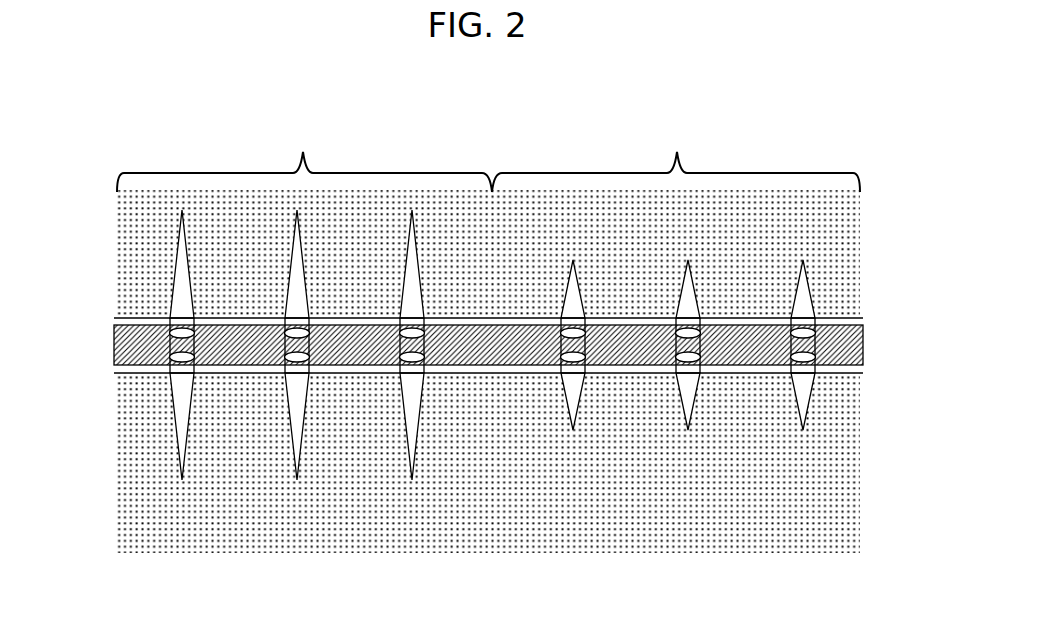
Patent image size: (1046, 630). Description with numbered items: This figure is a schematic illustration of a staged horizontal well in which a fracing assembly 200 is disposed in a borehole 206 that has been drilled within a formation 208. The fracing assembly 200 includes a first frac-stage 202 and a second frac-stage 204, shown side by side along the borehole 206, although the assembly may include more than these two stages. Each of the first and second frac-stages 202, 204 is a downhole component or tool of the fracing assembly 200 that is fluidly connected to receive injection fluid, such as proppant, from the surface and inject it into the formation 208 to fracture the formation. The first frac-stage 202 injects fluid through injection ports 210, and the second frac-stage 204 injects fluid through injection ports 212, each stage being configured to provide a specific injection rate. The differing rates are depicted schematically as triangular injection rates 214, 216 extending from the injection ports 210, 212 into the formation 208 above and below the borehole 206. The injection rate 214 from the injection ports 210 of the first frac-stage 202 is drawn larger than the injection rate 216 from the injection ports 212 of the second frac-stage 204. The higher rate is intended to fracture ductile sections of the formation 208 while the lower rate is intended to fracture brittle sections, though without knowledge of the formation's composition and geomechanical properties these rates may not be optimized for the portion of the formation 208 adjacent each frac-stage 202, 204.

The fracing assembly 200 is at (93, 331).
The first frac-stage 202 is at (304, 156).
The second frac-stage 204 is at (676, 156).
The borehole 206 is at (852, 374).
The formation 208 is at (488, 371).
The injection ports 210 is at (398, 356).
The injection ports 212 is at (790, 354).
The injection rate 214 is at (180, 408).
The injection rate 216 is at (800, 305).